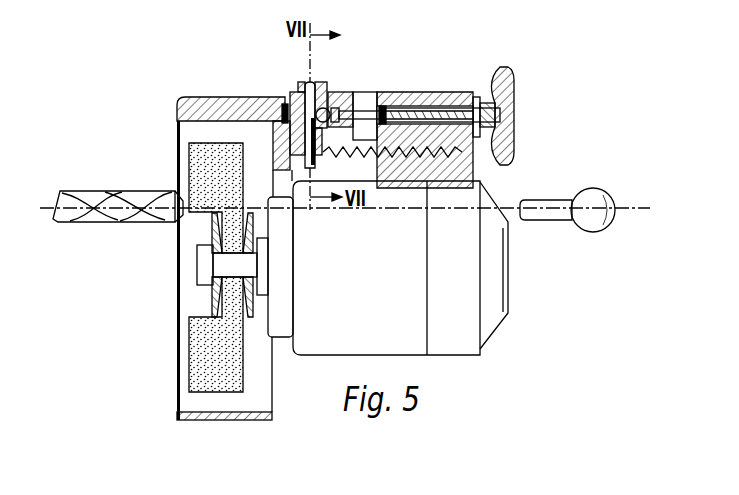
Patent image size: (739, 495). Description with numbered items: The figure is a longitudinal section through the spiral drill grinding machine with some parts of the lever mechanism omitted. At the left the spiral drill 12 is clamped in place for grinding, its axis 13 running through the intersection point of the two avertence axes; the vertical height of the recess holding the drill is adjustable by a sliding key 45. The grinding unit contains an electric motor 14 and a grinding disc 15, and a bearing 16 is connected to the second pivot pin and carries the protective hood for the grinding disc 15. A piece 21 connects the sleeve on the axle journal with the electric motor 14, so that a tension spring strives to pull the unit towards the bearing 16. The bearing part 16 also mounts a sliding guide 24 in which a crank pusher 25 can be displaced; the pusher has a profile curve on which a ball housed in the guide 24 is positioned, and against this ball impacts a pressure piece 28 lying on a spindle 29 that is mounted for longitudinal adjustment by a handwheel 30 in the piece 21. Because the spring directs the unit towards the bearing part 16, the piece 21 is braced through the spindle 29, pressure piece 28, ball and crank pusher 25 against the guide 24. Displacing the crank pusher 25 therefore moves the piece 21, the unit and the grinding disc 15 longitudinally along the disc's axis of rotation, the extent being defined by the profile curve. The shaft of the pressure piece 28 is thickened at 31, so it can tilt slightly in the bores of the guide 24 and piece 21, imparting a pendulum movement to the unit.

The drill 12 is at (115, 197).
The axis of the drill 13 is at (633, 212).
The electric motor 14 is at (488, 313).
The grinding disc 15 is at (203, 342).
The bearing 16 is at (207, 100).
The piece 21 is at (467, 163).
The sliding guide 24 is at (328, 97).
The crank pusher 25 is at (305, 85).
The pressure piece 28 is at (369, 123).
The spindle 29 is at (425, 108).
The handwheel 30 is at (513, 78).
The thickened shaft portion 31 is at (384, 105).
The sliding key 45 is at (547, 203).